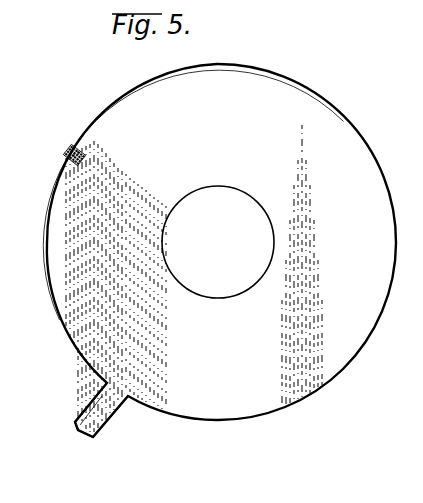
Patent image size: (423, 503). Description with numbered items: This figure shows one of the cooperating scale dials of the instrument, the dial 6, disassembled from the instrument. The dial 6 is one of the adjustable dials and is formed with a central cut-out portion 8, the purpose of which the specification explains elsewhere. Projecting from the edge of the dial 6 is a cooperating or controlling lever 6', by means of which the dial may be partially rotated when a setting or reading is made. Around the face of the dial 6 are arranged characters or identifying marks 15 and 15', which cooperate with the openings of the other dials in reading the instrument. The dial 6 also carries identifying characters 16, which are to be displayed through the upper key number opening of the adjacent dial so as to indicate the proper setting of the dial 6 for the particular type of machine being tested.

The dial 6 is at (221, 250).
The controlling lever 6' is at (101, 416).
The central cut-out portion 8 is at (186, 290).
The identifying marks 15 is at (99, 196).
The identifying marks 15' is at (193, 195).
The identifying characters 16 is at (279, 89).